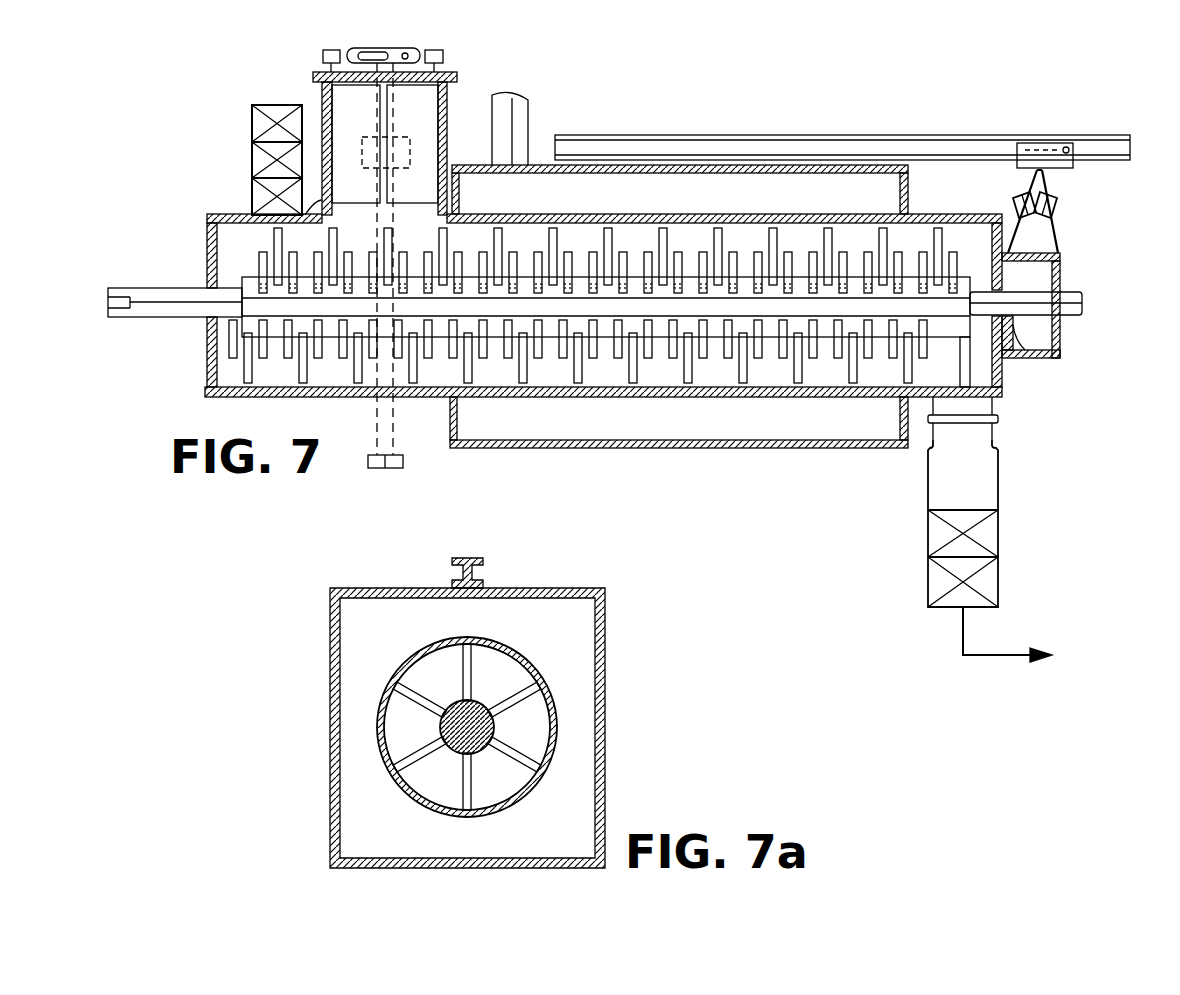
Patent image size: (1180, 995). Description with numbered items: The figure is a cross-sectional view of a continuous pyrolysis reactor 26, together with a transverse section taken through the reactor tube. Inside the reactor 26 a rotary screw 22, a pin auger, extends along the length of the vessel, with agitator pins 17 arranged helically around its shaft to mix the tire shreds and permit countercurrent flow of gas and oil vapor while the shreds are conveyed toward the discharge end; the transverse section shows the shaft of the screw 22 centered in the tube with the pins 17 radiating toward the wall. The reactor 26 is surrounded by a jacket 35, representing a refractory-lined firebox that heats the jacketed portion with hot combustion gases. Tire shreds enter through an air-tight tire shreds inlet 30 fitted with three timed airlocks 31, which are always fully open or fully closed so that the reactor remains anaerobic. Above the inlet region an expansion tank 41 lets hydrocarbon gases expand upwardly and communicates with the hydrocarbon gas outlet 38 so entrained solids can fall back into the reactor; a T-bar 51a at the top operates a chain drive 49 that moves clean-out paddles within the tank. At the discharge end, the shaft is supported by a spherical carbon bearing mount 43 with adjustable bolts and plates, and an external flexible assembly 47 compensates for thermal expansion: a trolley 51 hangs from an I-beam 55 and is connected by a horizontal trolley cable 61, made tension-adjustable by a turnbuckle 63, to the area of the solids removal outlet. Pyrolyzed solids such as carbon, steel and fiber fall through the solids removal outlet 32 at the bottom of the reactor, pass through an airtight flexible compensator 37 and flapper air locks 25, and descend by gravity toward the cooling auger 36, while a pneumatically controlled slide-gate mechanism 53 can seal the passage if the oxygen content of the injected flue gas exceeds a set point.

In FIG. 7, the agitator pins 17 is at (653, 230).
In FIG. 7a, the agitator pins 17 is at (471, 668).
In FIG. 7, the rotary screw 22 is at (165, 297).
In FIG. 7a, the rotary screw 22 is at (480, 748).
In FIG. 7, the flapper air locks 25 is at (1000, 530).
In FIG. 7, the pyrolysis reactor 26 is at (188, 156).
In FIG. 7, the tire shreds inlet 30 is at (314, 215).
In FIG. 7, the airlocks 31 is at (252, 118).
In FIG. 7, the solids removal outlet 32 is at (1000, 421).
In FIG. 7, the jacket 35 is at (565, 448).
In FIG. 7a, the jacket 35 is at (605, 692).
In FIG. 7, the cooling auger 36 is at (1028, 637).
In FIG. 7, the flexible compensator 37 is at (995, 465).
In FIG. 7, the hydrocarbon gas outlet 38 is at (420, 135).
In FIG. 7, the expansion tank 41 is at (462, 72).
In FIG. 7, the spherical carbon bearing mount 43 is at (1022, 350).
In FIG. 7, the flexible assembly 47 is at (1078, 190).
In FIG. 7, the chain drive 49 is at (338, 50).
In FIG. 7, the trolley 51 is at (1040, 152).
In FIG. 7, the T-bar 51a is at (400, 56).
In FIG. 7, the slide-gate mechanism 53 is at (935, 428).
In FIG. 7, the I-beam 55 is at (903, 135).
In FIG. 7a, the I-beam 55 is at (462, 558).
In FIG. 7, the trolley cable 61 is at (1057, 238).
In FIG. 7, the turnbuckle 63 is at (1058, 203).